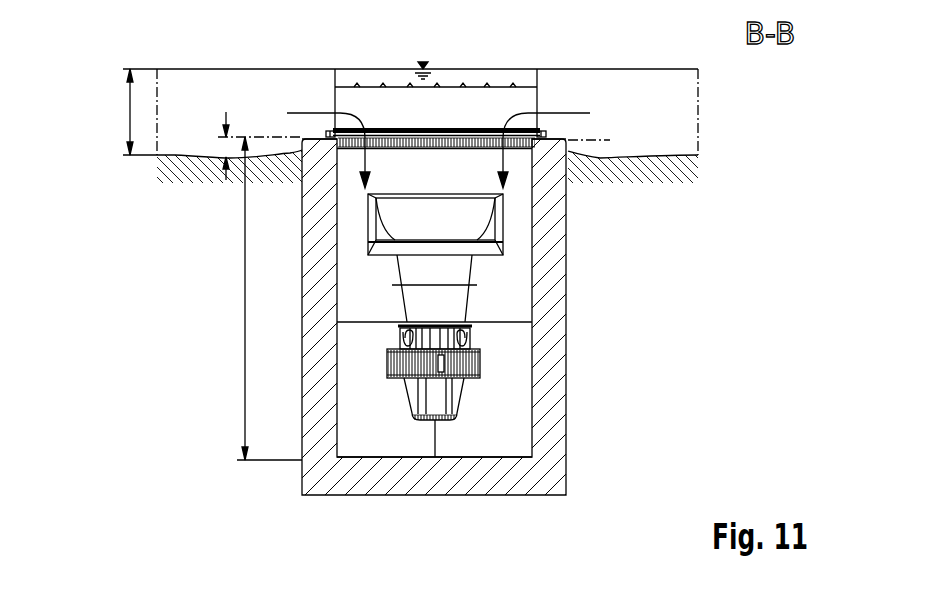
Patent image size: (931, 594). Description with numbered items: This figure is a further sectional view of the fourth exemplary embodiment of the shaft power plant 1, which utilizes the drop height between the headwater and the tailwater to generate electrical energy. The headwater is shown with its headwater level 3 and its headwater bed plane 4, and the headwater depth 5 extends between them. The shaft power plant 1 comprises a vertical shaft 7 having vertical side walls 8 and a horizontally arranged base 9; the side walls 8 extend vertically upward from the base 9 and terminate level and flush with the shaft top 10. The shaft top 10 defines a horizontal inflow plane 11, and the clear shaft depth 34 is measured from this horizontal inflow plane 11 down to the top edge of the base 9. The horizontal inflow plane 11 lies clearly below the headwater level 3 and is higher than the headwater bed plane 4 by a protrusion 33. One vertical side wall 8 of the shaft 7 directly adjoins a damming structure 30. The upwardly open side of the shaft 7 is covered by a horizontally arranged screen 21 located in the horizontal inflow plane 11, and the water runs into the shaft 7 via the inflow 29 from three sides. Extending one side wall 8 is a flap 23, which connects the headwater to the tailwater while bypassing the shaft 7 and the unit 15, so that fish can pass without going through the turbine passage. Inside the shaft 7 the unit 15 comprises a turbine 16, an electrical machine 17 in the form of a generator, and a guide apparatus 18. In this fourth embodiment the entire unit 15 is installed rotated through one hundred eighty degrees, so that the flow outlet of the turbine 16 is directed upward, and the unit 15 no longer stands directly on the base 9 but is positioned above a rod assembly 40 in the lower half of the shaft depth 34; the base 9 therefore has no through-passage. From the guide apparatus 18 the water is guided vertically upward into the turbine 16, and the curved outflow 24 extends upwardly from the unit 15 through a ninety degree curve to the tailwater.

The shaft power plant 1 is at (742, 121).
The headwater level 3 is at (453, 69).
The headwater bed plane 4 is at (175, 147).
The headwater depth 5 is at (130, 112).
The vertical shaft 7 is at (458, 345).
The vertical side wall 8 is at (317, 237).
The base 9 is at (428, 480).
The shaft top 10 is at (305, 134).
The horizontal inflow plane 11 is at (277, 140).
The unit 15 is at (474, 373).
The turbine 16 is at (474, 333).
The electrical machine 17 is at (455, 396).
The guide apparatus 18 is at (474, 361).
The screen 21 is at (408, 130).
The flap 23 is at (497, 94).
The curved outflow 24 is at (483, 268).
The inflow 29 is at (320, 130).
The damming structure 30 is at (172, 80).
The protrusion 33 is at (226, 112).
The clear shaft depth 34 is at (245, 272).
The rod assembly 40 is at (352, 322).